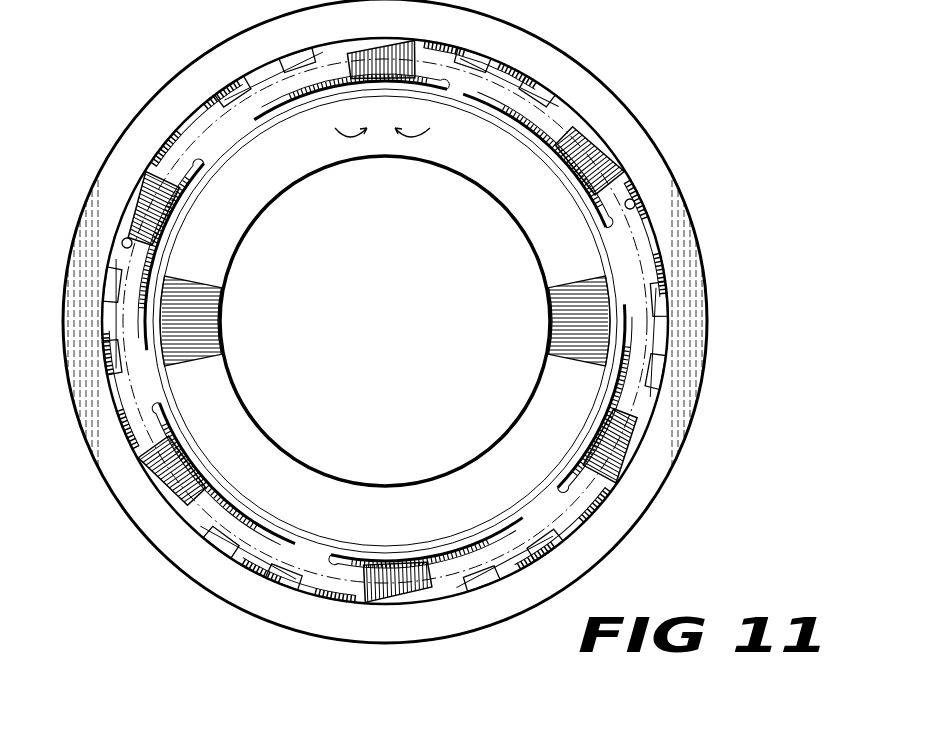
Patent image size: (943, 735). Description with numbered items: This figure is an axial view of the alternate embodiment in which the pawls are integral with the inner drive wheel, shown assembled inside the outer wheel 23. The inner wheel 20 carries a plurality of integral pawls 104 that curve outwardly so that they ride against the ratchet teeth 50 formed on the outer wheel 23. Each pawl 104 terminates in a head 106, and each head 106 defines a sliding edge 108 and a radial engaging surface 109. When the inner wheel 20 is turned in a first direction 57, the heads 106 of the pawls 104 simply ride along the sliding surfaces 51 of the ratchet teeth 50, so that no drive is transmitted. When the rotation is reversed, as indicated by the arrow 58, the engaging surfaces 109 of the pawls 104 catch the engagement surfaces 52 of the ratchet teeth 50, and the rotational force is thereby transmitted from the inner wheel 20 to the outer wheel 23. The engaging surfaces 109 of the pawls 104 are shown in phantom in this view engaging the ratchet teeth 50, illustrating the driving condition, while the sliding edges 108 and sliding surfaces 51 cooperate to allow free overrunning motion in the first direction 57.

The inner wheel 20 is at (262, 197).
The outer wheel 23 is at (140, 127).
The ratchet teeth 50 is at (598, 140).
The sliding surfaces 51 is at (635, 203).
The engagement surfaces 52 is at (623, 173).
The first direction 57 is at (432, 133).
The arrow 58 is at (332, 132).
The pawls 104 is at (313, 90).
The head 106 is at (158, 183).
The sliding edge 108 is at (124, 240).
The engaging surface 109 is at (150, 176).